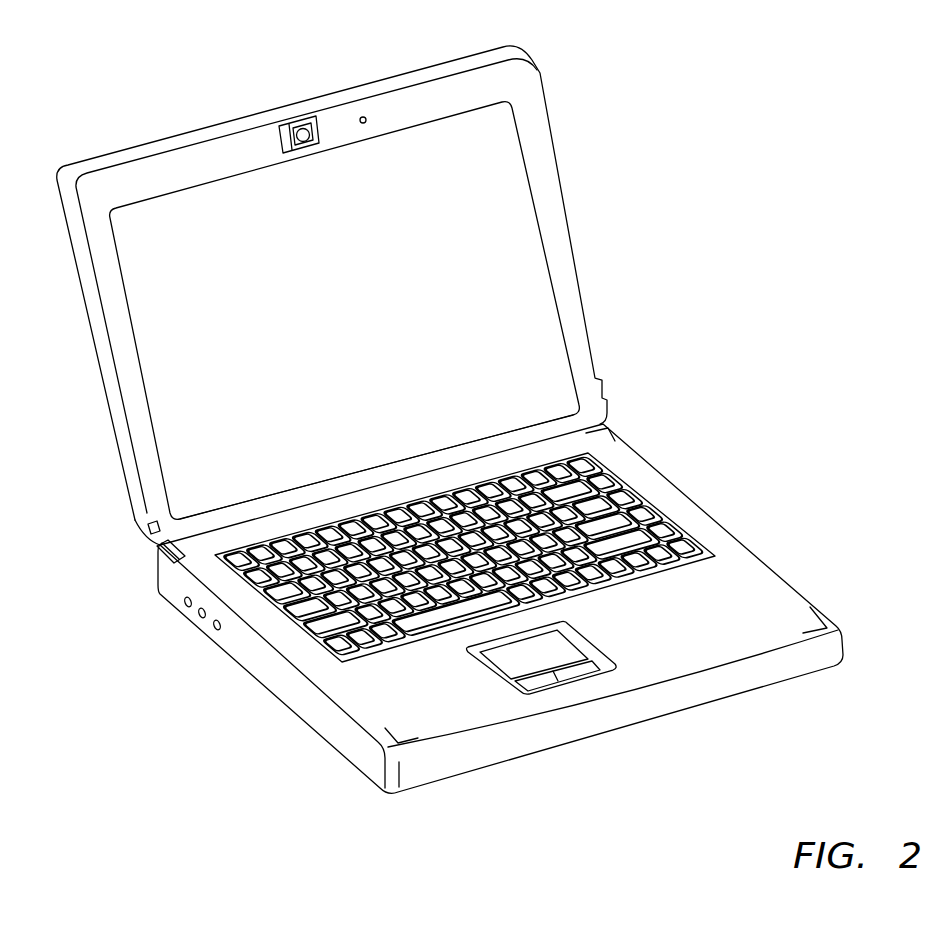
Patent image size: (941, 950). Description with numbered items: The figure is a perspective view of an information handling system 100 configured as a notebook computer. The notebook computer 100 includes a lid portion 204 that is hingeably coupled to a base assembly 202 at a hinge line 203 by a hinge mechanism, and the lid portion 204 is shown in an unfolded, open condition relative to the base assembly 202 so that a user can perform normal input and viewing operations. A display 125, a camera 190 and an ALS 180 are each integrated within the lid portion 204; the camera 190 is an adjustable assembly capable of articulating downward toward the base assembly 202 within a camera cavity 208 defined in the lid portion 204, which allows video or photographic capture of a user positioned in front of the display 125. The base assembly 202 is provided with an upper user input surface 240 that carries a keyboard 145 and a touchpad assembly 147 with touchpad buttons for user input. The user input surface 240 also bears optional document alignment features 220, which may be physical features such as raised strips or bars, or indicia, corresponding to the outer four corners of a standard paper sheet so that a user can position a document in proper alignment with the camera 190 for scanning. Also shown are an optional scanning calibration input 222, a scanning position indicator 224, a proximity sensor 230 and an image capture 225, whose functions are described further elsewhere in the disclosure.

The information handling system 100 is at (754, 116).
The display 125 is at (233, 232).
The keyboard 145 is at (600, 507).
The touchpad assembly 147 is at (592, 636).
The ALS 180 is at (365, 116).
The camera 190 is at (291, 121).
The base assembly 202 is at (803, 580).
The hinge line 203 is at (497, 445).
The lid portion 204 is at (577, 233).
The camera cavity 208 is at (314, 118).
The document alignment features 220 is at (617, 428).
The scanning calibration input 222 is at (178, 607).
The scanning position indicator 224 is at (214, 632).
The image capture 225 is at (198, 621).
The proximity sensor 230 is at (155, 550).
The upper user input surface 240 is at (705, 527).